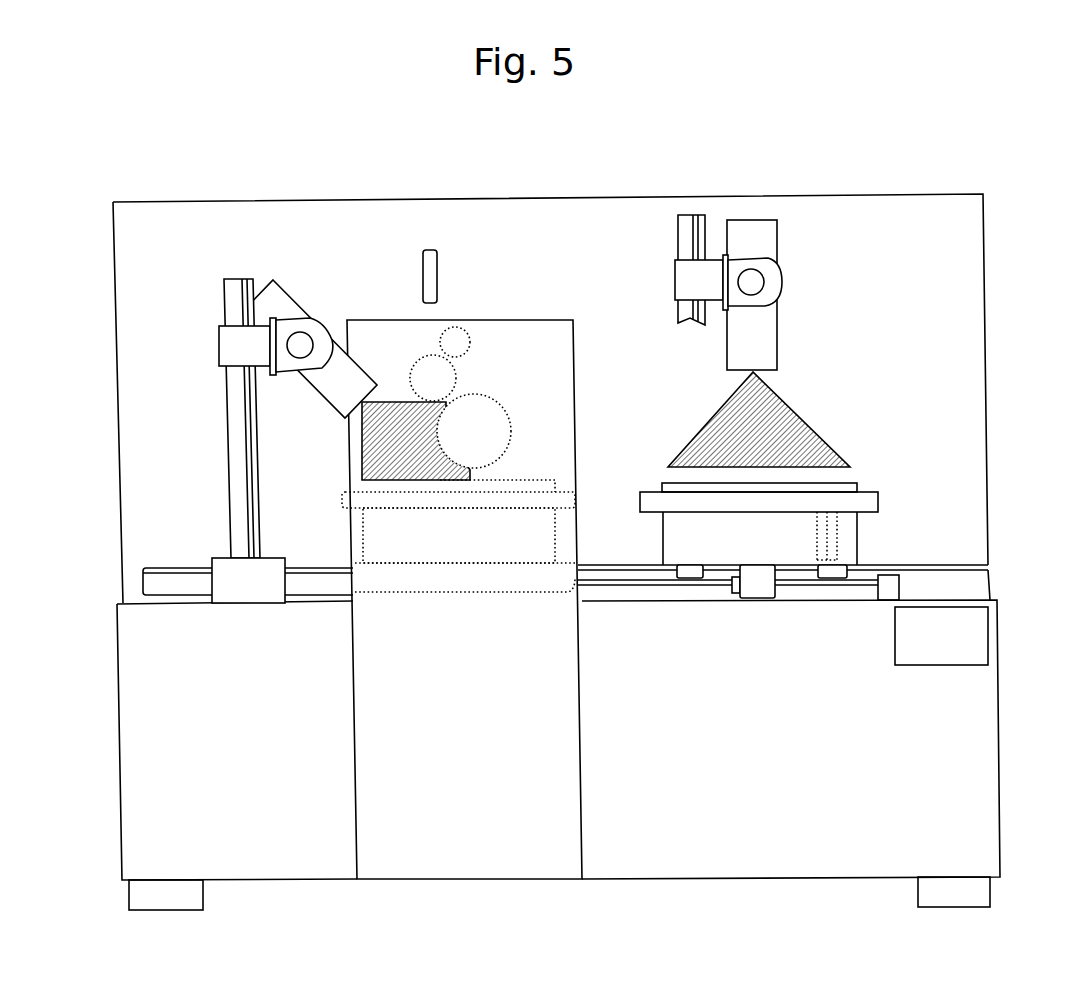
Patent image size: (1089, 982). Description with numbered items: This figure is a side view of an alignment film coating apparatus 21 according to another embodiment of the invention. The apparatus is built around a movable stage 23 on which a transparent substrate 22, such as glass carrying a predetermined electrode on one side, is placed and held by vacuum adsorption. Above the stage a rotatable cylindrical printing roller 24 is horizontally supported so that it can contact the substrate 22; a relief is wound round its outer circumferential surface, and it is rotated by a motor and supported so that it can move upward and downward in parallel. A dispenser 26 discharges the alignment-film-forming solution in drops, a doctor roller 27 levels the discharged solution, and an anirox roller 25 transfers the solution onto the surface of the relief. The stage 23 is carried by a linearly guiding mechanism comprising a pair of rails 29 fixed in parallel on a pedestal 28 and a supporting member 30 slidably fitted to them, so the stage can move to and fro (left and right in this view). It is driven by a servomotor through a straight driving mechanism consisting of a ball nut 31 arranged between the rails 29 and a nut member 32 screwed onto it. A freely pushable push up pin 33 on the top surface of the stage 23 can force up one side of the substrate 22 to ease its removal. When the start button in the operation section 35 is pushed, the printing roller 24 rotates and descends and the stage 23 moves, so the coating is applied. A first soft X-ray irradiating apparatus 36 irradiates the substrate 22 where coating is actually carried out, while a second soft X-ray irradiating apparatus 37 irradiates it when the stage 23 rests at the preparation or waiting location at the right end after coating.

The alignment film coating apparatus 21 is at (588, 195).
The transparent substrate 22 is at (857, 483).
The movable stage 23 is at (880, 497).
The cylindrical printing roller 24 is at (463, 385).
The anirox roller 25 is at (437, 377).
The dispenser 26 is at (430, 275).
The doctor roller 27 is at (457, 338).
The pedestal 28 is at (140, 607).
The rails 29 is at (982, 562).
The supporting member 30 is at (688, 572).
The ball nut 31 is at (815, 593).
The nut member 32 is at (757, 580).
The push up pin 33 is at (833, 533).
The operation section 35 is at (967, 650).
The first soft X-ray irradiating apparatus 36 is at (282, 303).
The second soft X-ray irradiating apparatus 37 is at (753, 240).